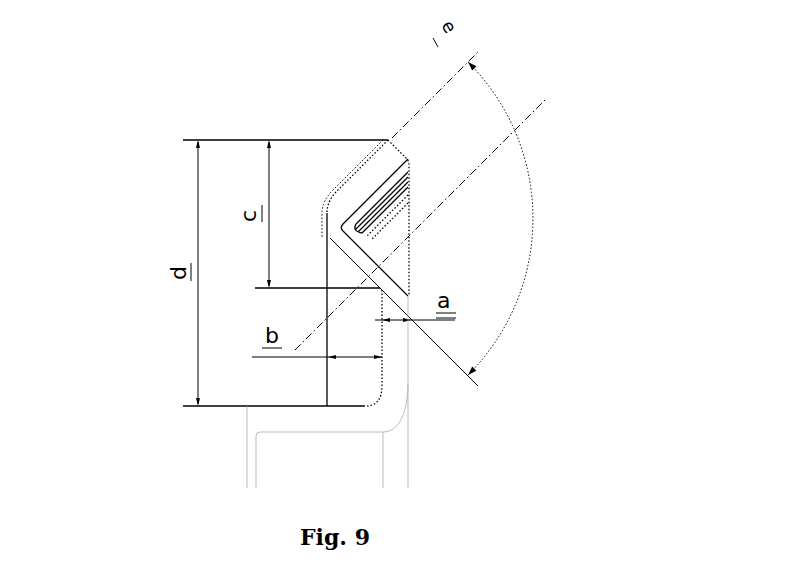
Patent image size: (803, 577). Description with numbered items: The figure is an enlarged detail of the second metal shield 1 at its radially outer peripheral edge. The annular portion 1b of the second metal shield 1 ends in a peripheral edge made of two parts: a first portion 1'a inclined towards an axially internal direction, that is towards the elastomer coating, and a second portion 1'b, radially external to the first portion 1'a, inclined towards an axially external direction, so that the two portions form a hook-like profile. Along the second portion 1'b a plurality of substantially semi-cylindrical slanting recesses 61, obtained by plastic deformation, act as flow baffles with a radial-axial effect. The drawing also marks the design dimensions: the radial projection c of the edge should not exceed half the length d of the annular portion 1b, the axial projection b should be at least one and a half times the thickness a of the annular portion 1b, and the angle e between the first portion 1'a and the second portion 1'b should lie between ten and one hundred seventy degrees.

The second metal shield 1 is at (425, 273).
The first portion of the radially outer peripheral edge 1'a is at (339, 179).
The second portion of the radially outer peripheral edge 1'b is at (276, 309).
The annular portion 1b is at (388, 368).
The slanting recesses 61 is at (381, 210).